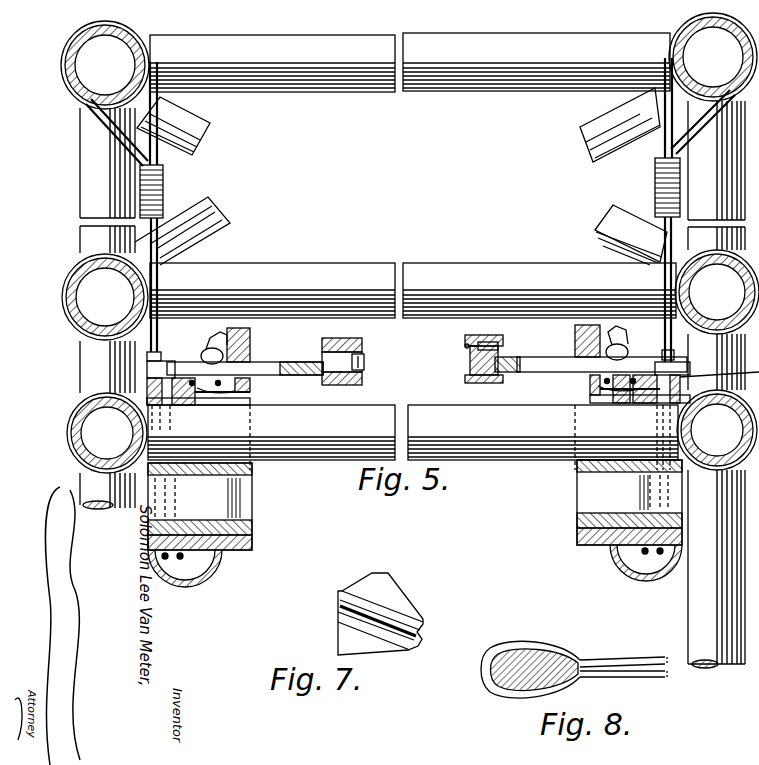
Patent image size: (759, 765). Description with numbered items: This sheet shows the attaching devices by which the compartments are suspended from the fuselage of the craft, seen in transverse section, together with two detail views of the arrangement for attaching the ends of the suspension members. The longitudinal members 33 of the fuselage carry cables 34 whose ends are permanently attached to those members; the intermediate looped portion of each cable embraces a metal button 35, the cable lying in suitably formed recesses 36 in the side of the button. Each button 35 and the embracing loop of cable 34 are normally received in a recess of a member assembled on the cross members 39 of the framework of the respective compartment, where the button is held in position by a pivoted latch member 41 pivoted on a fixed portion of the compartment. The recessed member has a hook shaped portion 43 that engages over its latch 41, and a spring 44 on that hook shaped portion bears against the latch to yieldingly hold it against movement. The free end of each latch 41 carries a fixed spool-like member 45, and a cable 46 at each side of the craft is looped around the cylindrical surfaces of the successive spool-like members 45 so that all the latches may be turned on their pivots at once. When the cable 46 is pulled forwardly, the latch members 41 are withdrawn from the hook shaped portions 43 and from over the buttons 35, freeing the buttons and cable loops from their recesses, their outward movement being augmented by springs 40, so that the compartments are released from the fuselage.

In FIG. 5, the longitudinal members 33 is at (66, 299).
In FIG. 5, the cables 34 is at (163, 282).
In FIG. 8, the cables 34 is at (612, 650).
In FIG. 5, the metal button 35 is at (240, 392).
In FIG. 7, the metal button 35 is at (398, 606).
In FIG. 8, the metal button 35 is at (492, 686).
In FIG. 7, the recesses 36 is at (355, 631).
In FIG. 5, the cross members 39 is at (478, 412).
In FIG. 5, the springs 40 is at (203, 405).
In FIG. 5, the pivoted latch members 41 is at (256, 363).
In FIG. 5, the hook shaped portion 43 is at (250, 335).
In FIG. 5, the spring 44 is at (633, 336).
In FIG. 5, the spool-like members 45 is at (468, 374).
In FIG. 5, the cable 46 is at (465, 347).